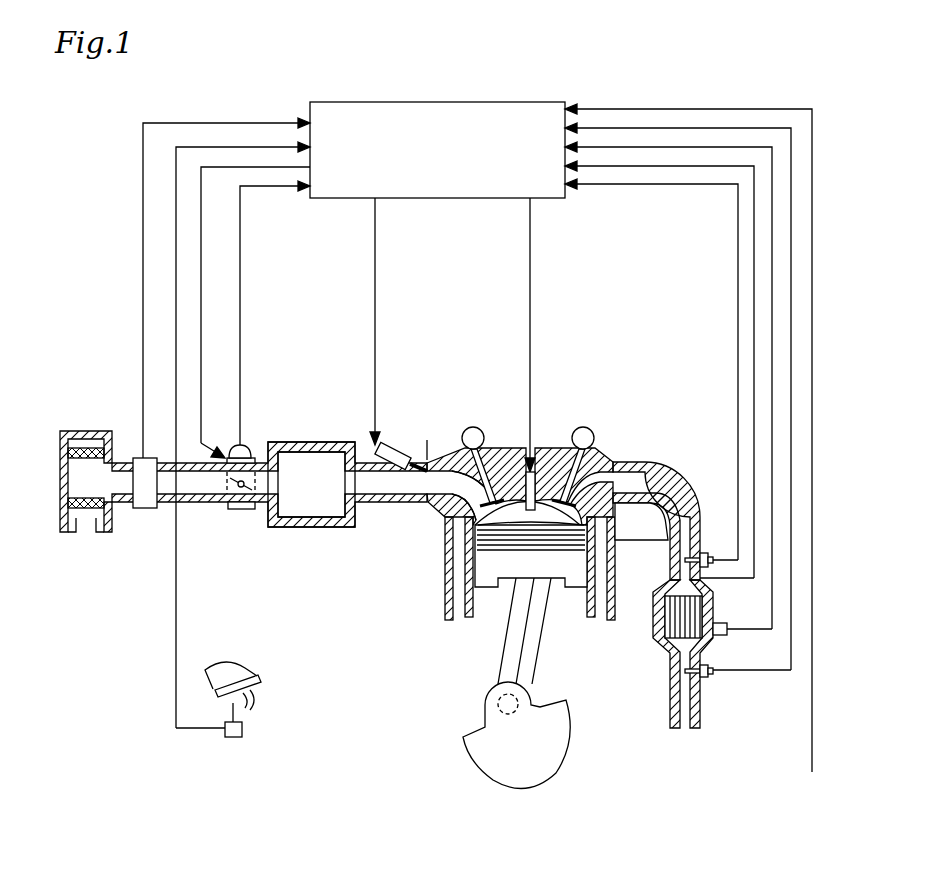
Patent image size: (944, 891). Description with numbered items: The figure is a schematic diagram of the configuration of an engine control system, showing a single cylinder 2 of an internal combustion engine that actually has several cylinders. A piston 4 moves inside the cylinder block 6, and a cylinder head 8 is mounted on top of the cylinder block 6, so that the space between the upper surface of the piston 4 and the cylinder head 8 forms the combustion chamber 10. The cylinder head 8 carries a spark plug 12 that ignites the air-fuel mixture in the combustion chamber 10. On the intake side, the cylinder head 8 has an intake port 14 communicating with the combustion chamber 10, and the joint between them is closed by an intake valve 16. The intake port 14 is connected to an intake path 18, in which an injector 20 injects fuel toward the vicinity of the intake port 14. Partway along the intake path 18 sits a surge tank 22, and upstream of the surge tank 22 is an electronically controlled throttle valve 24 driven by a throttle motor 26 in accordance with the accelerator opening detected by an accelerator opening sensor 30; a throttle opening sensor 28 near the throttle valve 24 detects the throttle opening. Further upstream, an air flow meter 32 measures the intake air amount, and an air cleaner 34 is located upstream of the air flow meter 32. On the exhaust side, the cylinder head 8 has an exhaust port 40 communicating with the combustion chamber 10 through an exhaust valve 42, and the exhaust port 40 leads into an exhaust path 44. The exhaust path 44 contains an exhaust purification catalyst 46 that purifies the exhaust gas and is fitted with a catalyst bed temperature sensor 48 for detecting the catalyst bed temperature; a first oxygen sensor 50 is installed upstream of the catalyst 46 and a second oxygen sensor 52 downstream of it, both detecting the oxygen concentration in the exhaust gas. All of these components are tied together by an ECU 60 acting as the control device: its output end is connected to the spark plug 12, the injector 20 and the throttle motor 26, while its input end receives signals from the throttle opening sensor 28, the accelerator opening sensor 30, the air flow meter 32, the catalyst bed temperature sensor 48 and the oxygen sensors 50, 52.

The cylinder 2 is at (443, 560).
The piston 4 is at (568, 577).
The cylinder block 6 is at (448, 610).
The cylinder head 8 is at (552, 462).
The combustion chamber 10 is at (498, 605).
The spark plug 12 is at (513, 455).
The intake port 14 is at (433, 485).
The intake valve 16 is at (447, 455).
The intake path 18 is at (386, 502).
The injector 20 is at (393, 446).
The surge tank 22 is at (313, 527).
The throttle valve 24 is at (237, 486).
The throttle motor 26 is at (252, 510).
The throttle opening sensor 28 is at (252, 452).
The accelerator opening sensor 30 is at (234, 738).
The air flow meter 32 is at (146, 509).
The air cleaner 34 is at (108, 533).
The exhaust port 40 is at (598, 487).
The exhaust valve 42 is at (600, 446).
The exhaust path 44 is at (657, 461).
The exhaust purification catalyst 46 is at (692, 603).
The catalyst bed temperature sensor 48 is at (727, 633).
The first oxygen sensor 50 is at (703, 553).
The second oxygen sensor 52 is at (710, 676).
The ECU 60 is at (482, 100).